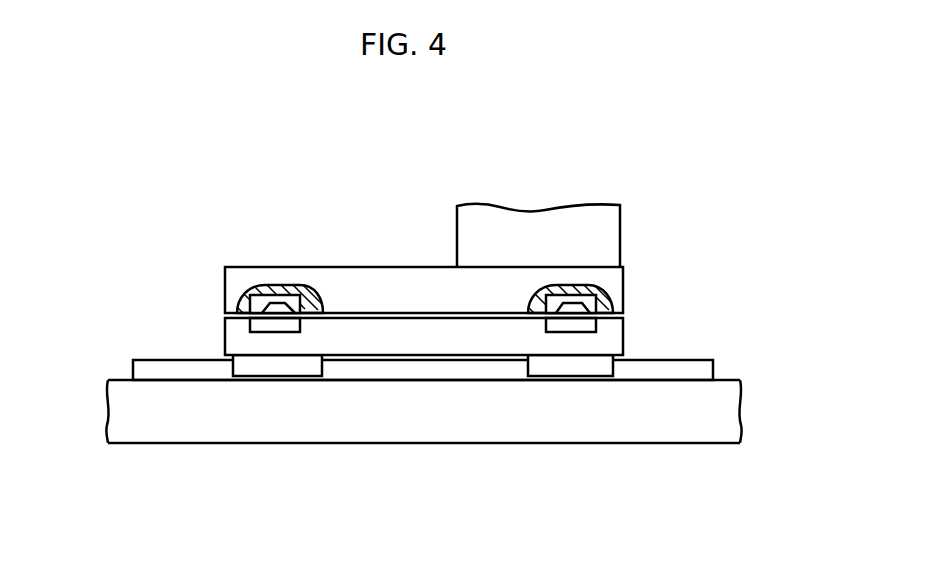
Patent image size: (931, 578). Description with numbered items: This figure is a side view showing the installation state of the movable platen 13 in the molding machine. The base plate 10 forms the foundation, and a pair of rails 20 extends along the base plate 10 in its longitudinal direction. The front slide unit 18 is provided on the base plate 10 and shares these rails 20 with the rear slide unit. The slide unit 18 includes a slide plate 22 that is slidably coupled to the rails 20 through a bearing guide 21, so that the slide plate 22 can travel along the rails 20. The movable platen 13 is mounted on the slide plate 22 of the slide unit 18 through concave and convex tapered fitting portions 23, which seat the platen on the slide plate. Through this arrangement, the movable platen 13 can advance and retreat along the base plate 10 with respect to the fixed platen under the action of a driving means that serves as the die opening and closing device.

The base plate 10 is at (178, 415).
The movable platen 13 is at (555, 205).
The front slide unit 18 is at (221, 331).
The rails 20 is at (670, 373).
The bearing guide 21 is at (575, 368).
The slide plate 22 is at (427, 345).
The concave and convex tapered fitting portions 23 is at (271, 291).